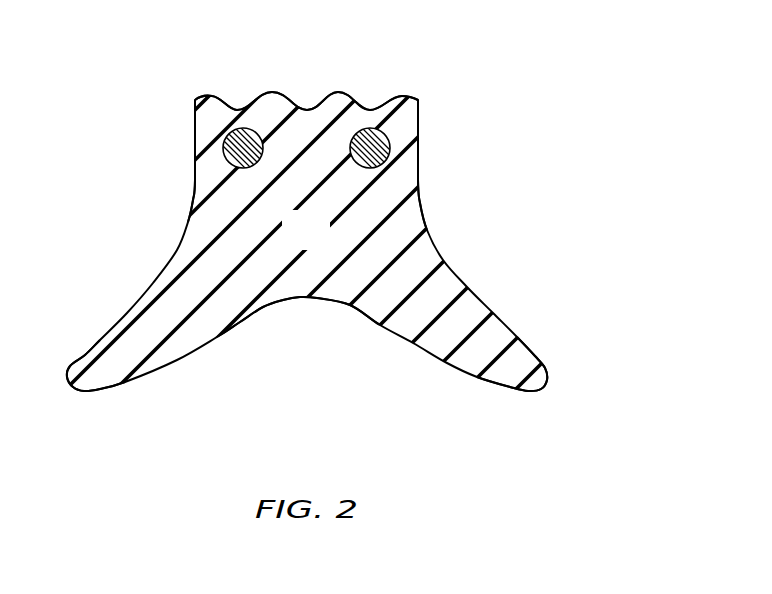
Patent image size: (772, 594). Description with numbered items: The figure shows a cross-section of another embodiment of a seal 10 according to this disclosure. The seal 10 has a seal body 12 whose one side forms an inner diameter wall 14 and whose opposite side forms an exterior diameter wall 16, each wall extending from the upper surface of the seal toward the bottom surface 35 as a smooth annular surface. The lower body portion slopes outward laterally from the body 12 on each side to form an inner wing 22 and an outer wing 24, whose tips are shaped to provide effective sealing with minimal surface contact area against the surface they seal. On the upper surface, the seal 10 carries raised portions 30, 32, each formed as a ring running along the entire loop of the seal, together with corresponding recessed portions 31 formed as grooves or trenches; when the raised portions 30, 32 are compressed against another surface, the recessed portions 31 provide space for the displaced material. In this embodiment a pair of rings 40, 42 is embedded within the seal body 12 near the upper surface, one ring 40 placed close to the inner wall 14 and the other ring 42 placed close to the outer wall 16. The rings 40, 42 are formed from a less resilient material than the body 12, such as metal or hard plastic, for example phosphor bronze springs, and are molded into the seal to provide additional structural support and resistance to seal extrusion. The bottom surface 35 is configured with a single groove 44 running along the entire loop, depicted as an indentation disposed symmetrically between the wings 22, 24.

The seal 10 is at (518, 122).
The seal body 12 is at (321, 243).
The inner diameter wall 14 is at (195, 185).
The exterior diameter wall 16 is at (419, 178).
The inner wing 22 is at (102, 365).
The outer wing 24 is at (518, 363).
The raised portion 30 is at (274, 91).
The recessed portions 31 is at (234, 106).
The raised portion 32 is at (338, 91).
The bottom surface 35 is at (254, 313).
The ring 40 is at (223, 148).
The ring 42 is at (390, 145).
The groove 44 is at (318, 303).